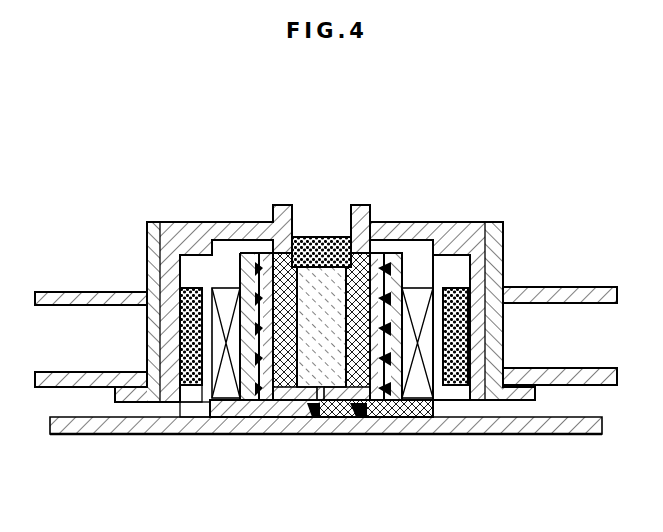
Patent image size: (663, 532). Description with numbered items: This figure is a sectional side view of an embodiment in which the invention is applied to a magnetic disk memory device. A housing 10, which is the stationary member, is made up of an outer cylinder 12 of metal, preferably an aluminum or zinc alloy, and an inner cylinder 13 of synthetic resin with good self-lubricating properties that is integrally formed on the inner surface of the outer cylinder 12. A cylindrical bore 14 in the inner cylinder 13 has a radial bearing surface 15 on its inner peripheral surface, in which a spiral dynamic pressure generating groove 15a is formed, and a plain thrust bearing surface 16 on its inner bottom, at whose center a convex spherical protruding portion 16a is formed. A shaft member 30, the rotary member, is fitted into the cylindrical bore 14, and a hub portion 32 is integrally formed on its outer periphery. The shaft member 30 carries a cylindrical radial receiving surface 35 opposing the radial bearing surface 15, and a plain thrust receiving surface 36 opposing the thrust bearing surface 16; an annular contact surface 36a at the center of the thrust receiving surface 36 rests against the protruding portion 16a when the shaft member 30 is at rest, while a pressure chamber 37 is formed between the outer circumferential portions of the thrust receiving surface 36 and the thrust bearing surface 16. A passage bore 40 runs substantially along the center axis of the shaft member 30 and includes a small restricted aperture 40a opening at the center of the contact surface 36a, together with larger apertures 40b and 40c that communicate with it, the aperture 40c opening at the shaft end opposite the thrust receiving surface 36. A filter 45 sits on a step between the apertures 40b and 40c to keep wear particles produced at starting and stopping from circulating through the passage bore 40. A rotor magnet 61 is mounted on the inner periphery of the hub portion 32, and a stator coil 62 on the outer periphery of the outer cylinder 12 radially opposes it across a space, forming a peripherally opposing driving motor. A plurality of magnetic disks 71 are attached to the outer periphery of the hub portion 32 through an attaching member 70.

The housing 10 is at (517, 428).
The outer cylinder 12 is at (437, 250).
The inner cylinder 13 is at (380, 256).
The cylindrical bore 14 is at (384, 318).
The radial bearing surface 15 is at (373, 338).
The dynamic pressure generating groove 15a is at (262, 406).
The thrust bearing surface 16 is at (375, 416).
The protruding portion 16a is at (318, 416).
The shaft member 30 is at (304, 290).
The hub portion 32 is at (165, 331).
The radial receiving surface 35 is at (373, 354).
The thrust receiving surface 36 is at (314, 416).
The contact surface 36a is at (333, 416).
The pressure chamber 37 is at (280, 412).
The passage bore 40 is at (365, 262).
The restricted aperture 40a is at (400, 418).
The aperture 40b is at (426, 420).
The aperture 40c is at (291, 222).
The filter 45 is at (326, 250).
The rotor magnet 61 is at (188, 392).
The stator coil 62 is at (230, 400).
The attaching member 70 is at (155, 248).
The magnetic disks 71 is at (55, 293).